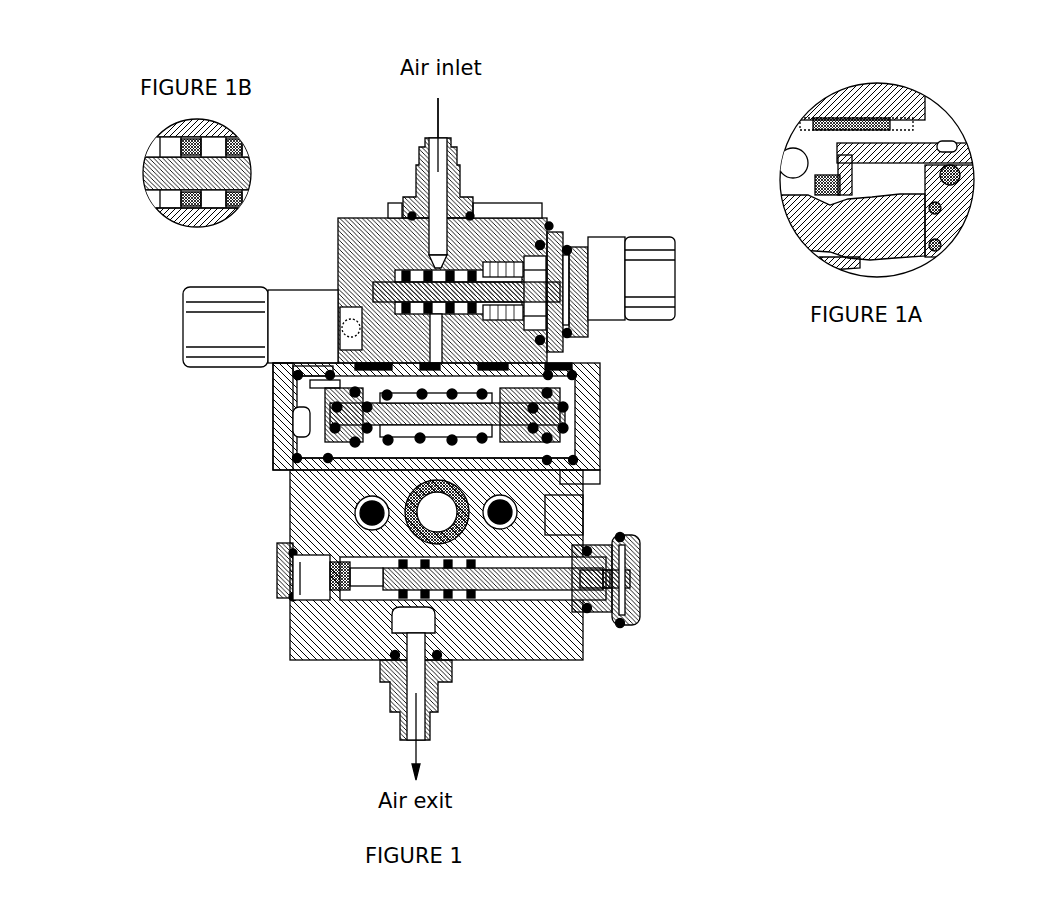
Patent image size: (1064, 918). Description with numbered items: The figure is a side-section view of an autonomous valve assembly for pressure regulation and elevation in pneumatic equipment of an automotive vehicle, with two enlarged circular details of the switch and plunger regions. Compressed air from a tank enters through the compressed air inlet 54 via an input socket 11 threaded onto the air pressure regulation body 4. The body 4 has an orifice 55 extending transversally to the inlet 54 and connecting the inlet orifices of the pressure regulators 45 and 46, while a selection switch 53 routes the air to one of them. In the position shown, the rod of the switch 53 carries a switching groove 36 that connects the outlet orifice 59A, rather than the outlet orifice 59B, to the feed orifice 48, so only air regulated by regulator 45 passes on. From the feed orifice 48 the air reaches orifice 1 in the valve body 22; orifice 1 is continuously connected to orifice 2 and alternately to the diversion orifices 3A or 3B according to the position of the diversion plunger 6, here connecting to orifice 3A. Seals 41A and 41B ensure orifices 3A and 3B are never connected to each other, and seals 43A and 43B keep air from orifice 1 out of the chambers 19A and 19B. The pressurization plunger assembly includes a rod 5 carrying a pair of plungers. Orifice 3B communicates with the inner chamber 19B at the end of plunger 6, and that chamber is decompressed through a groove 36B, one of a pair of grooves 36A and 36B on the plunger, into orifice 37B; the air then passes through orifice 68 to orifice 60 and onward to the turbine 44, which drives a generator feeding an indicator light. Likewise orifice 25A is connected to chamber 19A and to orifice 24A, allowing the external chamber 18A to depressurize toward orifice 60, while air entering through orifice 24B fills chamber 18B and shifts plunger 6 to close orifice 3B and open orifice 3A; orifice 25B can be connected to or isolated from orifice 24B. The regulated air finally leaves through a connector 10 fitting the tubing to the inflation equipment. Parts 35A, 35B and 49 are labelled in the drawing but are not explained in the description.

In FIG. 1, the orifice 1 is at (462, 416).
In FIG. 1, the orifice 2 is at (280, 582).
In FIG. 1, the diversion orifice 3A is at (362, 329).
In FIG. 1, the diversion orifice 3B is at (579, 293).
In FIG. 1, the air pressure regulation body 4 is at (562, 248).
In FIG. 1, the rod 5 is at (644, 587).
In FIG. 1, the diversion plunger 6 is at (391, 435).
In FIG. 1, the connector 10 is at (456, 686).
In FIG. 1, the input socket 11 is at (419, 179).
In FIG. 1, the external chamber 18A is at (262, 441).
In FIG. 1, the chamber 18B is at (584, 415).
In FIG. 1, the chamber 19A is at (391, 485).
In FIG. 1, the inner chamber 19B is at (512, 366).
In FIG. 1A, the inner chamber 19B is at (894, 243).
In FIG. 1, the valve body 22 is at (473, 585).
In FIG. 1, the orifice 24A is at (344, 462).
In FIG. 1, the orifice 24B is at (628, 577).
In FIG. 1, the orifice 25A is at (330, 494).
In FIG. 1, the orifice 25B is at (649, 580).
In FIG. 1, the seal 35A is at (331, 332).
In FIG. 1A, the seal 35B is at (876, 87).
In FIG. 1B, the switching groove 36 is at (156, 177).
In FIG. 1, the groove 36A is at (281, 560).
In FIG. 1, the groove 36B is at (488, 423).
In FIG. 1A, the orifice 37B is at (884, 98).
In FIG. 1, the seal 41A is at (600, 515).
In FIG. 1, the seal 41B is at (615, 484).
In FIG. 1, the seal 43A is at (237, 376).
In FIG. 1A, the seal 43B is at (918, 158).
In FIG. 1, the turbine 44 is at (424, 274).
In FIG. 1, the pressure regulator 45 is at (245, 314).
In FIG. 1, the pressure regulator 46 is at (647, 263).
In FIG. 1, the feed orifice 48 is at (256, 393).
In FIG. 1B, the feed orifice 48 is at (168, 230).
In FIG. 1, the flange 49 is at (473, 197).
In FIG. 1, the selection switch 53 is at (621, 263).
In FIG. 1, the compressed air inlet 54 is at (485, 187).
In FIG. 1, the orifice 55 is at (426, 263).
In FIG. 1, the outlet orifice 59A is at (385, 256).
In FIG. 1B, the outlet orifice 59A is at (149, 113).
In FIG. 1, the outlet orifice 59B is at (614, 251).
In FIG. 1, the orifice 60 is at (249, 416).
In FIG. 1, the orifice 68 is at (638, 290).